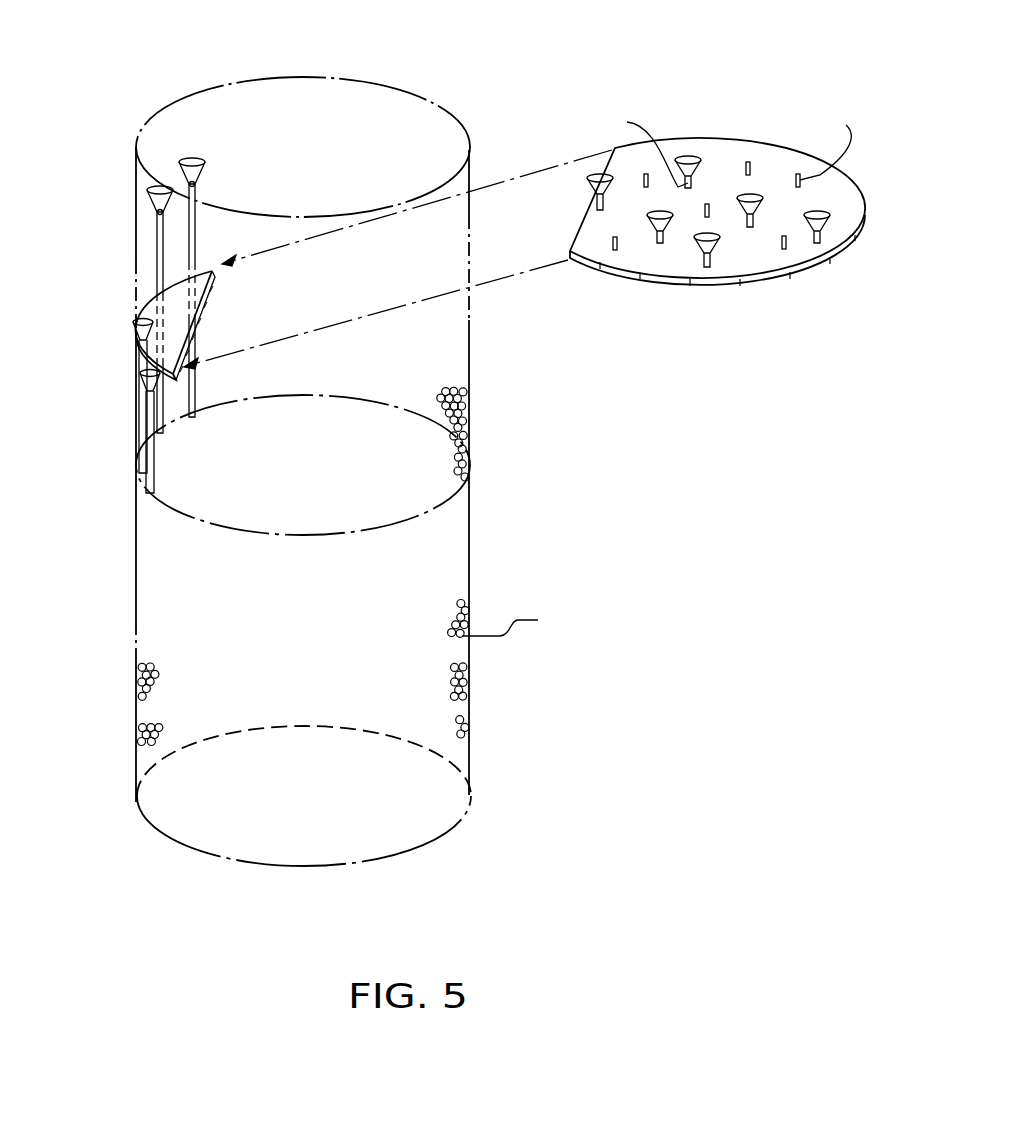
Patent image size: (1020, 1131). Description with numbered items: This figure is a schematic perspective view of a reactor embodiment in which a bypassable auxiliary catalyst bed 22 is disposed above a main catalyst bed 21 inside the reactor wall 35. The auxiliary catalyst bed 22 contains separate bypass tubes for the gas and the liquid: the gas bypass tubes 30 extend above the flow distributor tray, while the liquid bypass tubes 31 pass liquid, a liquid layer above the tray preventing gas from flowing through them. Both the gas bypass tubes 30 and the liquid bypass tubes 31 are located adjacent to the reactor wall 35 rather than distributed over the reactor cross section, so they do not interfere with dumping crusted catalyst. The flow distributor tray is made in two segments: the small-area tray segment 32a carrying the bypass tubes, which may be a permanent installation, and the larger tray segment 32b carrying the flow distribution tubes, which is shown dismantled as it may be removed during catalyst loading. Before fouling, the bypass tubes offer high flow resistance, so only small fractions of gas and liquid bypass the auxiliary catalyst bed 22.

The main catalyst bed 21 is at (299, 689).
The auxiliary catalyst bed 22 is at (472, 462).
The gas bypass tubes 30 is at (160, 436).
The liquid bypass tubes 31 is at (137, 458).
The tray segment 32a is at (215, 262).
The tray segment 32b is at (603, 268).
The reactor wall 35 is at (134, 300).